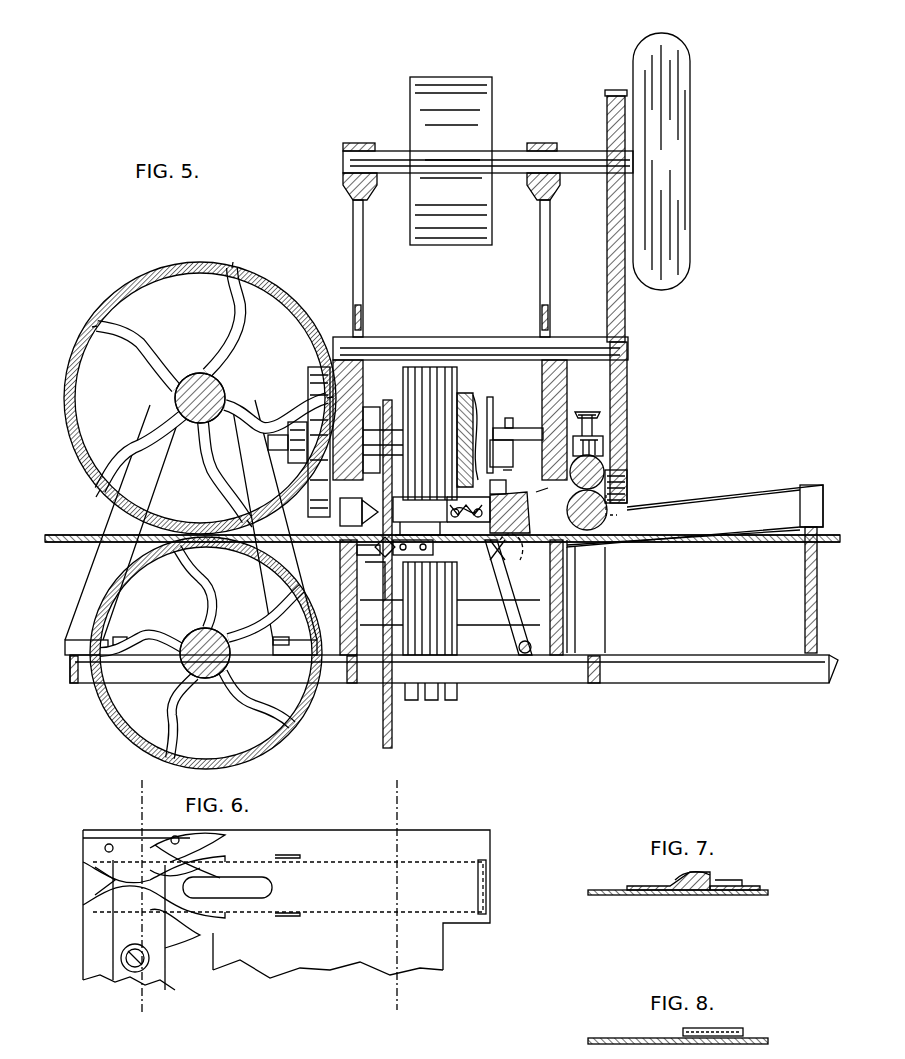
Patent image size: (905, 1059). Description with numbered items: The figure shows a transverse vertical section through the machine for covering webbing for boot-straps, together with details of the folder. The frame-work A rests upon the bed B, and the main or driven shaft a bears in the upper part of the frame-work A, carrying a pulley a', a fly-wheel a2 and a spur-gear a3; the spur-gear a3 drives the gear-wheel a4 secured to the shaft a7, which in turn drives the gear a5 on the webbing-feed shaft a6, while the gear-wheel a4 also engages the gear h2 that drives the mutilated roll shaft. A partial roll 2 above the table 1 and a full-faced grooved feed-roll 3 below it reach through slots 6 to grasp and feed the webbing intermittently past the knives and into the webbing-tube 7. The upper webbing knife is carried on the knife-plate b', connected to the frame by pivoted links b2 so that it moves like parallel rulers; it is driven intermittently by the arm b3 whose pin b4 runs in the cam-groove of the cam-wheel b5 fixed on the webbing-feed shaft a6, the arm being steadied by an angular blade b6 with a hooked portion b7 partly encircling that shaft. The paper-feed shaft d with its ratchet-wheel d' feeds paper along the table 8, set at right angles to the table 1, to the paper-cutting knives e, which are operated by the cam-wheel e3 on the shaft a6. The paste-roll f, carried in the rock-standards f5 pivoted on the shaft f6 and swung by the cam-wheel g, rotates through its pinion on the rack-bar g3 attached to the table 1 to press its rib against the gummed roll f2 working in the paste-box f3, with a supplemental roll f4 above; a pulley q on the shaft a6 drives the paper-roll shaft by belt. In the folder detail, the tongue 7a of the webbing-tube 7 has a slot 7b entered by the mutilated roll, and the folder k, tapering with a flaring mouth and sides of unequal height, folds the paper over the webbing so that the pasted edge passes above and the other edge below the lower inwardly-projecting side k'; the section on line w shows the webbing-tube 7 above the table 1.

In FIG. 5, the main or driven shaft a is at (488, 150).
In FIG. 5, the pulley a' is at (451, 161).
In FIG. 5, the fly-wheel a2 is at (201, 262).
In FIG. 5, the spur-gear a3 is at (110, 708).
In FIG. 5, the gear-wheel a4 is at (630, 407).
In FIG. 5, the gear a5 is at (628, 490).
In FIG. 5, the webbing-feed shaft a6 is at (285, 455).
In FIG. 5, the shaft a7 is at (494, 340).
In FIG. 5, the frame-work A is at (540, 263).
In FIG. 5, the bed B is at (454, 669).
In FIG. 5, the knife-plate b' is at (426, 516).
In FIG. 5, the pivoted links b2 is at (340, 520).
In FIG. 5, the arm b3 is at (502, 480).
In FIG. 5, the pin b4 is at (505, 418).
In FIG. 5, the cam-wheel b5 is at (470, 393).
In FIG. 5, the angular blade b6 is at (501, 451).
In FIG. 5, the hooked portion b7 is at (510, 405).
In FIG. 5, the paper-feed shaft d is at (190, 394).
In FIG. 5, the ratchet-wheel d' is at (212, 394).
In FIG. 5, the paper-cutting knives e is at (378, 560).
In FIG. 5, the cam-wheel e3 is at (308, 378).
In FIG. 5, the paste-roll f is at (500, 500).
In FIG. 5, the gummed roll f2 is at (603, 515).
In FIG. 5, the paste-box f3 is at (682, 533).
In FIG. 5, the supplemental roll f4 is at (632, 465).
In FIG. 5, the rock-standards f5 is at (510, 575).
In FIG. 5, the shaft f6 is at (524, 655).
In FIG. 5, the cam-wheel g is at (542, 497).
In FIG. 5, the rack-bar g3 is at (530, 510).
In FIG. 5, the gear h2 is at (385, 402).
In FIG. 5, the pulley q is at (377, 437).
In FIG. 5, the table 1 is at (466, 535).
In FIG. 6, the table 1 is at (286, 910).
In FIG. 7, the table 1 is at (678, 883).
In FIG. 8, the table 1 is at (678, 1032).
In FIG. 5, the partial roll 2 is at (405, 372).
In FIG. 5, the feed-roll 3 is at (450, 645).
In FIG. 6, the feed-roll 3 is at (140, 901).
In FIG. 5, the slots 6 is at (503, 467).
In FIG. 6, the webbing-tube 7 is at (289, 885).
In FIG. 8, the webbing-tube 7 is at (745, 1030).
In FIG. 6, the tongue 7a is at (85, 862).
In FIG. 6, the slot 7b is at (227, 887).
In FIG. 5, the table 8 is at (335, 543).
In FIG. 6, the folder k is at (162, 893).
In FIG. 7, the folder k is at (668, 874).
In FIG. 6, the lower inwardly-projecting side k' is at (165, 868).
In FIG. 7, the lower inwardly-projecting side k' is at (735, 874).
In FIG. 6, the section line w is at (397, 900).